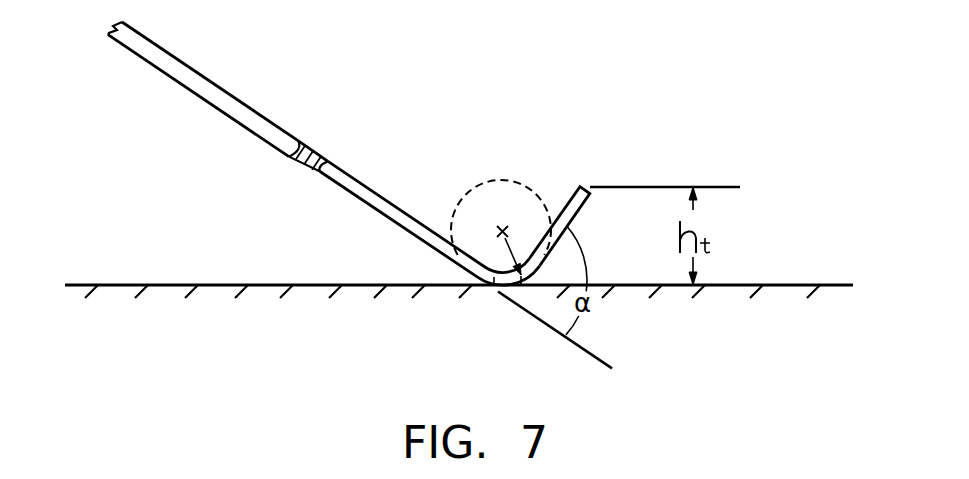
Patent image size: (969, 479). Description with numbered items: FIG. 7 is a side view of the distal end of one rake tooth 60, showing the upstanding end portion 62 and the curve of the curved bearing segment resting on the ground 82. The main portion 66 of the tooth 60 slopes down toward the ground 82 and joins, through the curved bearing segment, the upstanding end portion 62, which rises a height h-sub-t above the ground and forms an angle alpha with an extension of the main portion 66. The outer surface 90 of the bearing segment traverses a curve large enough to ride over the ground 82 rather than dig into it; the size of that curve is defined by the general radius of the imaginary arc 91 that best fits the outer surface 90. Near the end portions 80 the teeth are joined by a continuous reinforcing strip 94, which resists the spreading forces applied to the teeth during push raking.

The tooth 60 is at (225, 90).
The upstanding end portion 62 is at (572, 220).
The main portion 66 is at (378, 192).
The end portion 80 is at (490, 286).
The ground 82 is at (132, 285).
The outer surface 90 is at (537, 292).
The imaginary arc 91 is at (518, 182).
The reinforcing strip 94 is at (319, 152).